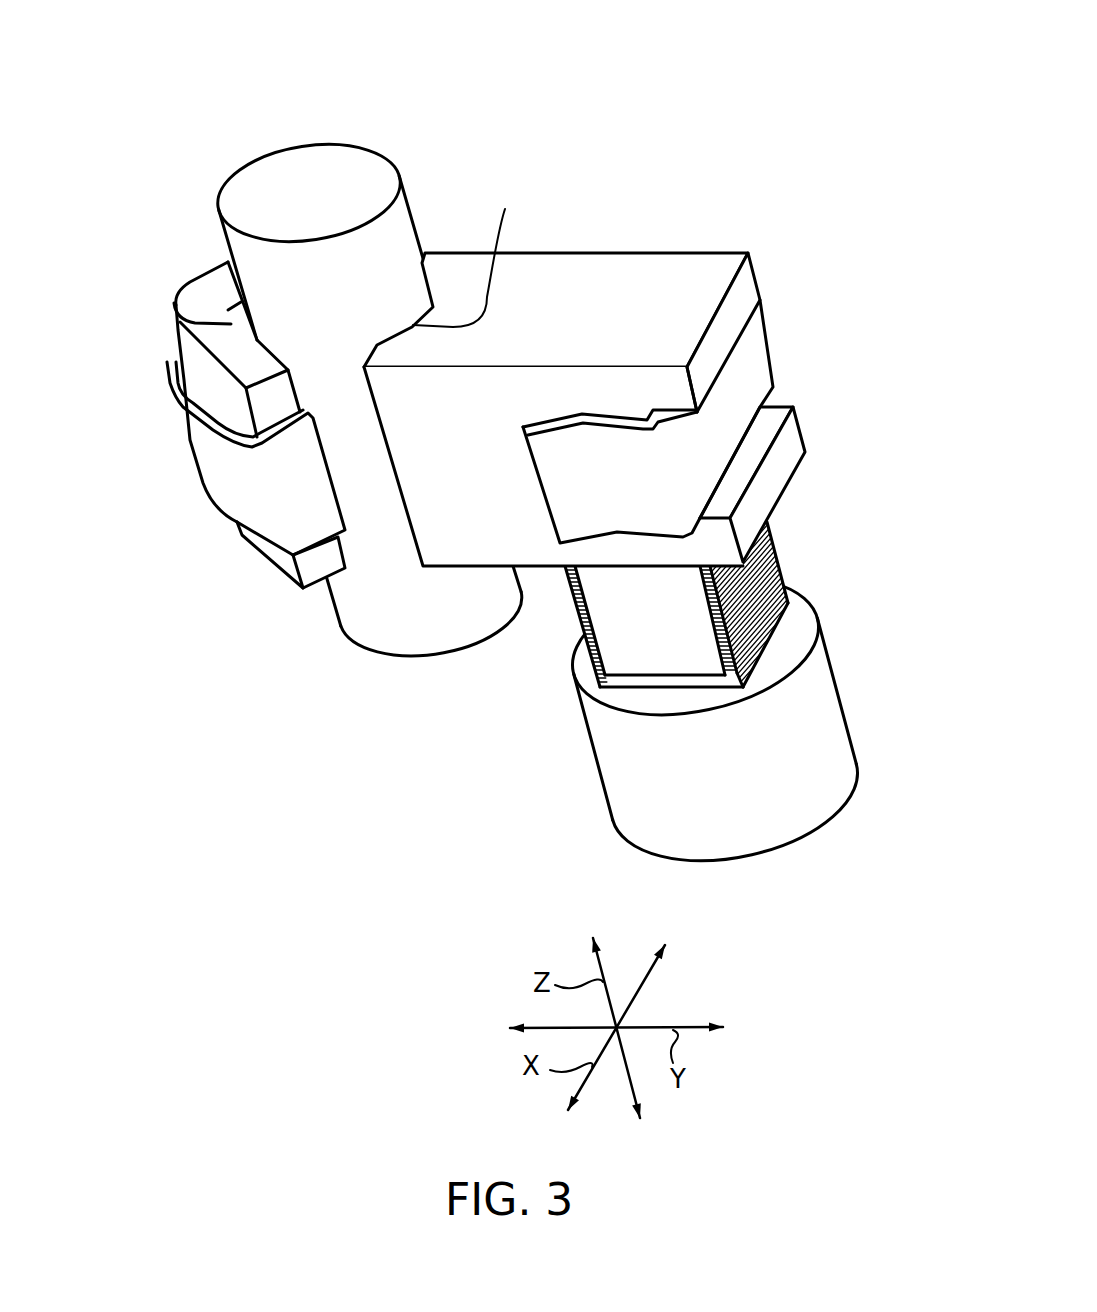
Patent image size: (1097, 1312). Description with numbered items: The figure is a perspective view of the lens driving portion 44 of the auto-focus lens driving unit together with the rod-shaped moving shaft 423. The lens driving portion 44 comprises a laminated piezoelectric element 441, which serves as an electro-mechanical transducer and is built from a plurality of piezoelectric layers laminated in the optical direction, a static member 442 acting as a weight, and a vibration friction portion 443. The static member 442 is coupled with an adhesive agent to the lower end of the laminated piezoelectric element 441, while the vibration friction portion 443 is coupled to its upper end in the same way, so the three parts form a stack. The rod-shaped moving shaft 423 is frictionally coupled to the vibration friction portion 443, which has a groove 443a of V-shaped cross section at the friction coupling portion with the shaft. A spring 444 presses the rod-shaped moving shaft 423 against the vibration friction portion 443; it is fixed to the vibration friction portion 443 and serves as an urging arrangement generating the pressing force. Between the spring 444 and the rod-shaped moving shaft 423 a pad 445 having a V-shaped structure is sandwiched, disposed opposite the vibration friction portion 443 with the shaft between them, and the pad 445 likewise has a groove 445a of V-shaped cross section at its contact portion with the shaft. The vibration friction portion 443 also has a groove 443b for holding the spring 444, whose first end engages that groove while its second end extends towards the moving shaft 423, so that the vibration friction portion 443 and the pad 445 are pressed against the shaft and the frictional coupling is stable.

The lens driving portion 44 is at (619, 127).
The rod-shaped moving shaft 423 is at (357, 622).
The laminated piezoelectric element 441 is at (760, 578).
The static member 442 is at (737, 722).
The vibration friction portion 443 is at (740, 297).
The groove 443a is at (485, 254).
The groove 443b is at (765, 427).
The spring 444 is at (748, 375).
The pad 445 is at (203, 367).
The groove 445a is at (177, 303).